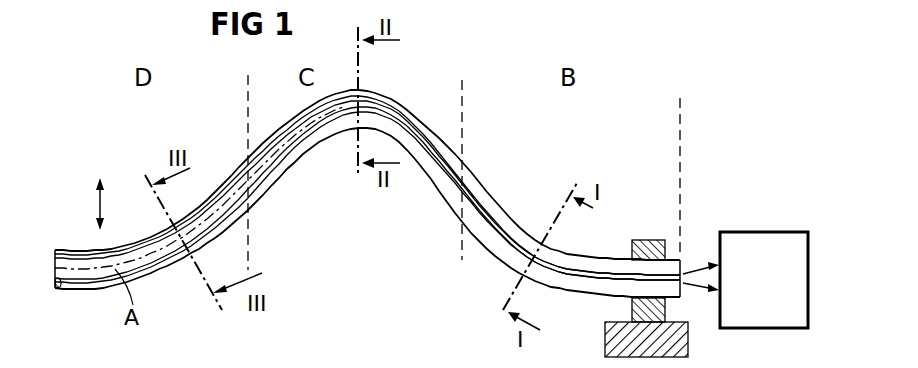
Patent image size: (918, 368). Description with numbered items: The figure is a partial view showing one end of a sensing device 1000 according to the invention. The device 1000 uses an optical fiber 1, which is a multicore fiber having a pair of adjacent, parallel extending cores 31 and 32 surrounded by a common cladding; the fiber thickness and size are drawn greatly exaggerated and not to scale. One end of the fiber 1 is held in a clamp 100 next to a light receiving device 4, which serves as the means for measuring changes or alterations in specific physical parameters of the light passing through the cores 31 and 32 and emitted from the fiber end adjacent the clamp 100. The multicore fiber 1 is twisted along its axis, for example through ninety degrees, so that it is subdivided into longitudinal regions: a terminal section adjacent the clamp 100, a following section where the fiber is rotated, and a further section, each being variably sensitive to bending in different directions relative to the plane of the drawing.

The optical fiber 1 is at (426, 126).
The core 31 is at (283, 133).
The core 32 is at (274, 176).
The clamp 100 is at (642, 240).
The light receiving device 4 is at (752, 232).
The sensing device 1000 is at (404, 209).